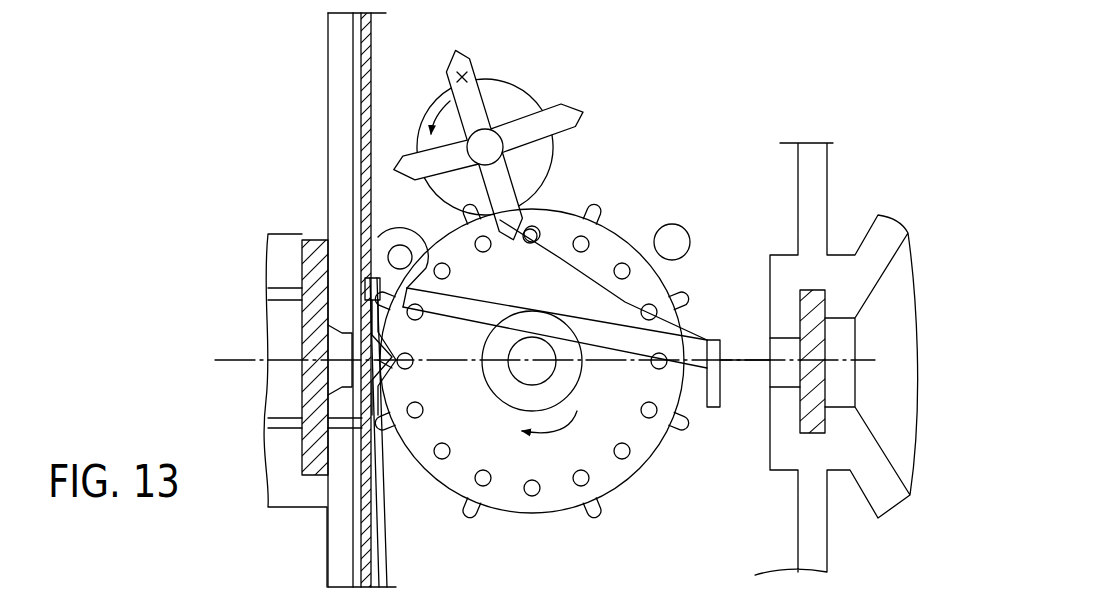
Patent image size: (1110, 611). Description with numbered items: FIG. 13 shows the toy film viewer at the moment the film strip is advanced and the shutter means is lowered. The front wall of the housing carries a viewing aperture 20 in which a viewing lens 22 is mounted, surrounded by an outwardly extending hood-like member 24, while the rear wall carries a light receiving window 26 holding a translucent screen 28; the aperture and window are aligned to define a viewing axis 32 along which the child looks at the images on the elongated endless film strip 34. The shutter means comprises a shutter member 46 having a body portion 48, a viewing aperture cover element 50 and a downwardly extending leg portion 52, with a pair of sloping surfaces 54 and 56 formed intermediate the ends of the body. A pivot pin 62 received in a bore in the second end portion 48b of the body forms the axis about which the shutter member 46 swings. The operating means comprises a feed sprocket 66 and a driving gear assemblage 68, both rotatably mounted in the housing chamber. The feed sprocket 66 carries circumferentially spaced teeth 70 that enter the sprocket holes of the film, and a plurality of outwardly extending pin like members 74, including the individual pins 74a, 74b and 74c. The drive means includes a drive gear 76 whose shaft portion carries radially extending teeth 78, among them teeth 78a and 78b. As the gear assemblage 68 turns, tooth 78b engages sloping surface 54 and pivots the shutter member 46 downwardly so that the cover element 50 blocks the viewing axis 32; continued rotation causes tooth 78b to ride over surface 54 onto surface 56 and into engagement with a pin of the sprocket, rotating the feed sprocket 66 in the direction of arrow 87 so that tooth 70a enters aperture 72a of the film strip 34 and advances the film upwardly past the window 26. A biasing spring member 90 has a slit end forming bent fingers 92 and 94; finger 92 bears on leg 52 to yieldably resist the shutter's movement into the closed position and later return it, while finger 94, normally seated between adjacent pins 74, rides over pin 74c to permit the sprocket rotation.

The viewing aperture 20 is at (830, 345).
The viewing lens 22 is at (830, 383).
The hood-like member 24 is at (892, 230).
The light receiving window 26 is at (345, 370).
The translucent screen 28 is at (308, 316).
The viewing axis 32 is at (738, 358).
The endless film strip 34 is at (358, 95).
The shutter member 46 is at (619, 350).
The body portion 48 is at (626, 302).
The second end portion 48b is at (378, 236).
The viewing aperture cover element 50 is at (712, 407).
The leg portion 52 is at (370, 296).
The sloping surface 54 is at (483, 254).
The sloping surface 56 is at (527, 244).
The pivot pin 62 is at (390, 253).
The feed sprocket 66 is at (632, 496).
The driving gear assemblage 68 is at (458, 133).
The teeth 70 is at (604, 219).
The tooth 70a is at (394, 424).
The aperture 72a is at (268, 418).
The pin like members 74 is at (615, 280).
The hole 74a is at (474, 240).
The hole 74b is at (548, 214).
The pin 74c is at (412, 357).
The drive gear 76 is at (500, 110).
The teeth 78 is at (586, 112).
The tooth 78a is at (456, 64).
The tooth 78b is at (508, 196).
The arrow 87 is at (558, 439).
The spring member 90 is at (391, 556).
The bent finger 92 is at (362, 306).
The bent finger 94 is at (380, 370).